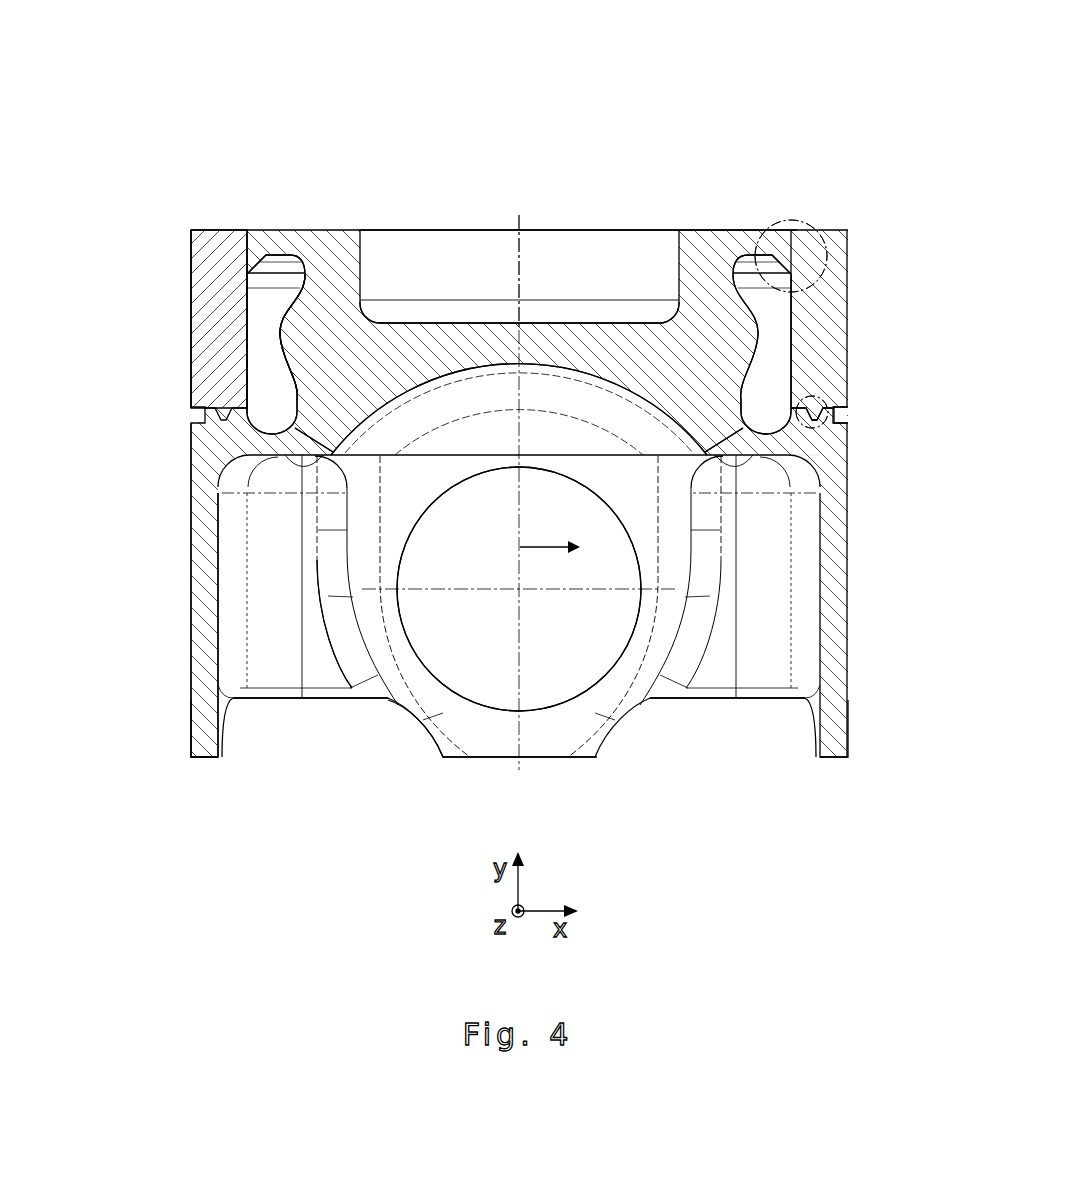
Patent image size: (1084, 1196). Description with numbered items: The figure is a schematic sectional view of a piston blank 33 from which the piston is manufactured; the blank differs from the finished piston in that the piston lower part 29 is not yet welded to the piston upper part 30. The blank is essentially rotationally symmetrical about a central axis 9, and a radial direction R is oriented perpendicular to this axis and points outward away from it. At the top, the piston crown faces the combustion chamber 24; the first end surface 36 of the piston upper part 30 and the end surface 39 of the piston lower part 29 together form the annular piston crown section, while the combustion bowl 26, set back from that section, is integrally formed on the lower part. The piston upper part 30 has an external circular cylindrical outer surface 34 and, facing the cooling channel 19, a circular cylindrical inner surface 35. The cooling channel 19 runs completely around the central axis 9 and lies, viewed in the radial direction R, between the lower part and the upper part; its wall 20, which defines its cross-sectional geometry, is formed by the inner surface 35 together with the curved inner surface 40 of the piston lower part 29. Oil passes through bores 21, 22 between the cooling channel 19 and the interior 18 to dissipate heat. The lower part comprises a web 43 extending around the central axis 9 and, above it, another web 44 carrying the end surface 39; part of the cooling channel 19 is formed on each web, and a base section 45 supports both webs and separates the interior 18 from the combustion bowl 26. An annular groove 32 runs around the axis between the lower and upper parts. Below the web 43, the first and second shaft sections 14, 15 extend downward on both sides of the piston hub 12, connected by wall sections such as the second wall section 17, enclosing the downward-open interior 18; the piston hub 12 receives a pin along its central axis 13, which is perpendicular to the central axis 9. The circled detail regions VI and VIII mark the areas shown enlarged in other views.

The piston blank 33 is at (514, 74).
The combustion chamber 24 is at (537, 157).
The central axis 9 is at (518, 243).
The base section 45 is at (541, 340).
The combustion bowl 26 is at (621, 318).
The end surface 39 is at (695, 235).
The web 44 is at (745, 242).
The detailed view VI is at (812, 222).
The piston upper part 30 is at (203, 216).
The first end surface 36 is at (243, 230).
The cooling channel 19 is at (282, 300).
The outer surface 34 is at (191, 256).
The curved inner surface 40 is at (272, 325).
The inner surface 35 is at (243, 366).
The wall 20 is at (113, 335).
The bore 21 is at (292, 430).
The bore 22 is at (740, 434).
The detailed view VIII is at (832, 400).
The groove 32 is at (858, 415).
The web 43 is at (808, 445).
The interior 18 is at (287, 584).
The radial direction R is at (550, 535).
The piston hub 12 is at (452, 688).
The central axis 13 is at (520, 591).
The second wall section 17 is at (306, 698).
The piston lower part 29 is at (718, 712).
The first shaft section 14 is at (204, 757).
The second shaft section 15 is at (835, 757).